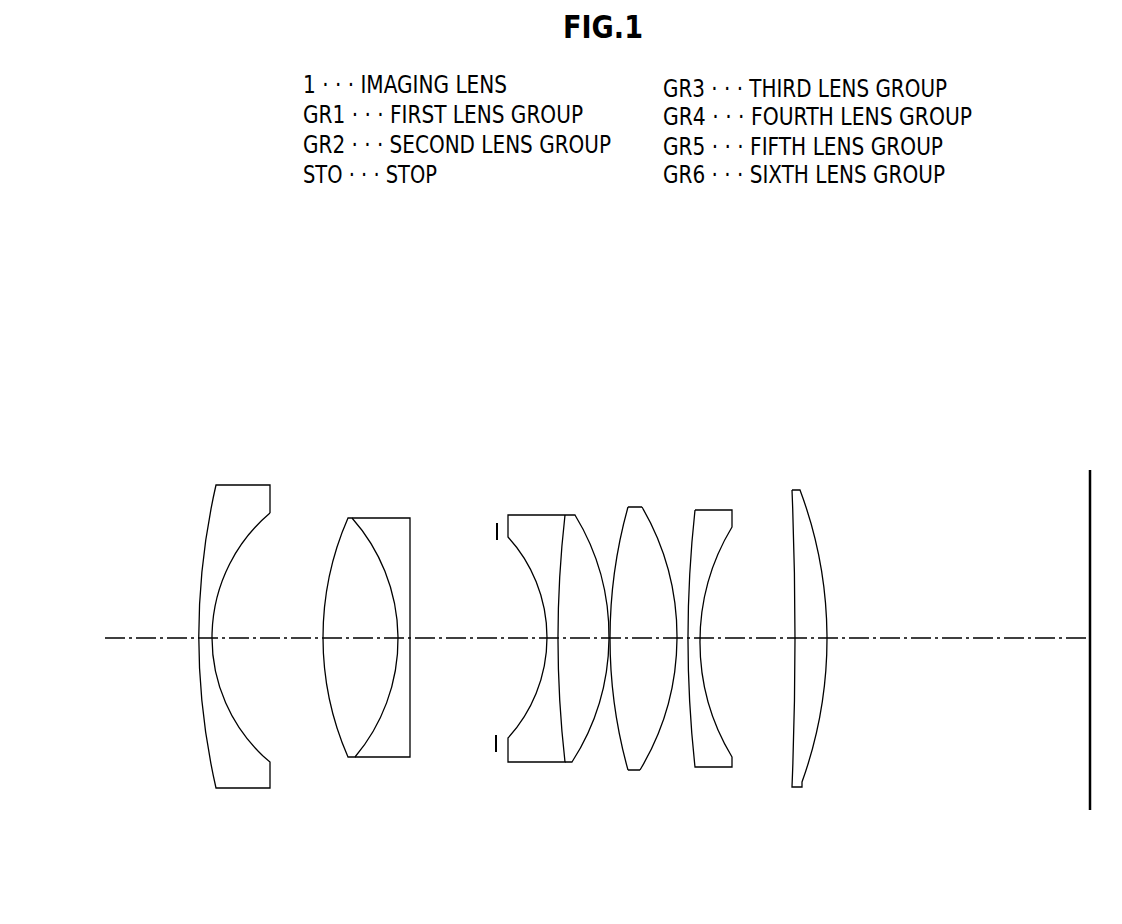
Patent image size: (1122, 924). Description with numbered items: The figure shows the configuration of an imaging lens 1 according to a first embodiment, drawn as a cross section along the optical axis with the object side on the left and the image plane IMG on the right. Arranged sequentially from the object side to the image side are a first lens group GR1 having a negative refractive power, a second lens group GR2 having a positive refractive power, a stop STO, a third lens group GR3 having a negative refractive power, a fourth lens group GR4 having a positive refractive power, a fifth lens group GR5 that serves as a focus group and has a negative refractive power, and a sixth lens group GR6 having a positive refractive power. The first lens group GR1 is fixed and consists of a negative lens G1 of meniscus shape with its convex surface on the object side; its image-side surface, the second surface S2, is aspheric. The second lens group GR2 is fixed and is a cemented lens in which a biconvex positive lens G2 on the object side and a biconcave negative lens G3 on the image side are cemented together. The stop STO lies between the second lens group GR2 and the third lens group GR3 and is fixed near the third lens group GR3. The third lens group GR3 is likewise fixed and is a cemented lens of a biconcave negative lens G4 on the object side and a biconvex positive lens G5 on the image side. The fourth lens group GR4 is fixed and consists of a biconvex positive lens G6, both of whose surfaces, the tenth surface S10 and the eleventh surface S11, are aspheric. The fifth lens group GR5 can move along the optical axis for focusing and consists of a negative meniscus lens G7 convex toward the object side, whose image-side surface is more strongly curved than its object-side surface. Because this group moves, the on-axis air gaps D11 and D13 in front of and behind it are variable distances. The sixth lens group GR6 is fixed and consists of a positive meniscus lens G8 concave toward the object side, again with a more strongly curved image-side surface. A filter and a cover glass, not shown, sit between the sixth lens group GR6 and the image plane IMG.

The imaging lens 1 is at (139, 283).
The first lens group GR1 is at (268, 337).
The second lens group GR2 is at (417, 337).
The third lens group GR3 is at (575, 337).
The fourth lens group GR4 is at (653, 337).
The fifth lens group GR5 is at (737, 337).
The sixth lens group GR6 is at (818, 337).
The stop STO is at (497, 525).
The negative lens G1 is at (243, 485).
The positive lens G2 is at (348, 518).
The negative lens G3 is at (396, 518).
The negative lens G4 is at (542, 515).
The positive lens G5 is at (575, 515).
The positive lens G6 is at (635, 507).
The negative lens G7 is at (713, 510).
The positive lens G8 is at (795, 490).
The second surface S2 is at (265, 757).
The tenth surface S10 is at (620, 743).
The eleventh surface S11 is at (653, 744).
The variable distance D11 is at (681, 640).
The variable distance D13 is at (757, 643).
The image plane IMG is at (1090, 470).